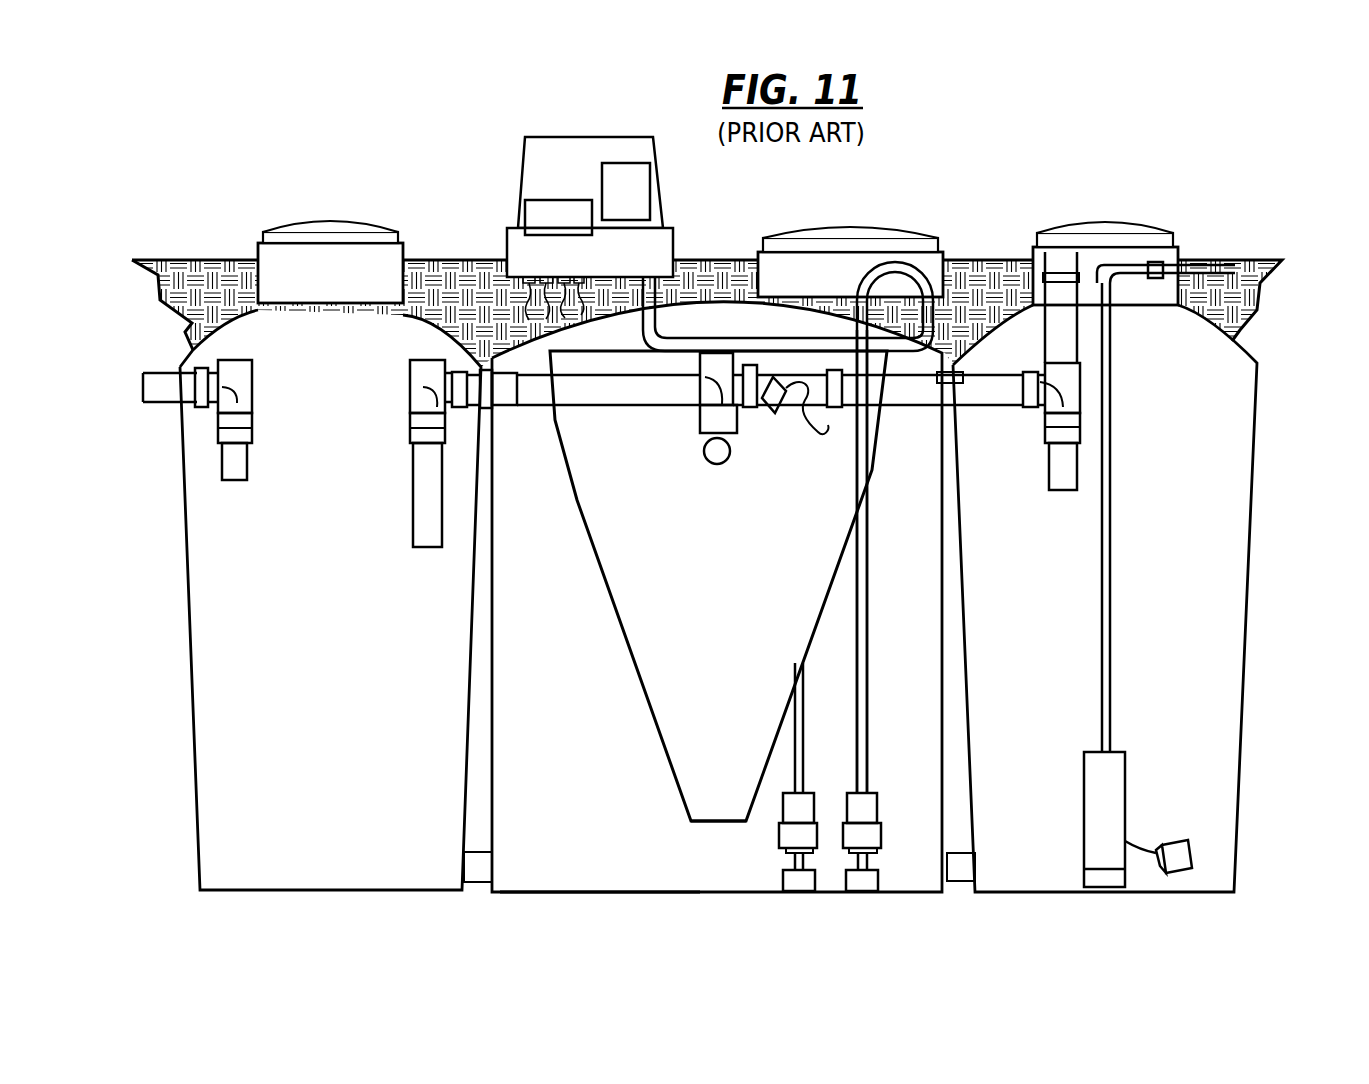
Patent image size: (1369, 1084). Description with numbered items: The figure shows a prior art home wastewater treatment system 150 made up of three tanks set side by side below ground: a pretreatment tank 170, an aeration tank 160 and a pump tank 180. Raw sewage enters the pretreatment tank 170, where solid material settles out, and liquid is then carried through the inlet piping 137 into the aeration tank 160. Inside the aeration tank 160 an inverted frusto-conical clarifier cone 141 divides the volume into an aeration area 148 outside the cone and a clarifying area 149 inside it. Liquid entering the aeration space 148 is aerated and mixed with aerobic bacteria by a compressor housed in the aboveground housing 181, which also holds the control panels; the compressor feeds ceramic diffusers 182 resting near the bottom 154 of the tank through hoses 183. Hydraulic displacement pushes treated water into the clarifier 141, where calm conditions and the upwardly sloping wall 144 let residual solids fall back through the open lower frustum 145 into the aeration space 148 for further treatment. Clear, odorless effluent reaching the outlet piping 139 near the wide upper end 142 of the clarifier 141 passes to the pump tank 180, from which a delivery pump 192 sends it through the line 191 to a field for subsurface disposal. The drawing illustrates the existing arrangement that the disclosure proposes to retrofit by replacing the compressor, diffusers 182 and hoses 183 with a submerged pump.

The existing system 150 is at (1132, 116).
The pretreatment tank 170 is at (178, 659).
The aeration tank 160 is at (480, 693).
The pump tank 180 is at (1263, 547).
The housing 181 is at (513, 163).
The wide upper end 142 is at (558, 388).
The inlet pipe 137 is at (503, 398).
The outlet piping 139 is at (733, 455).
The clarifier cone 141 is at (628, 677).
The upwardly sloping wall 144 is at (594, 545).
The aeration area 148 is at (561, 648).
The clarifying area 149 is at (726, 596).
The frustum 145 is at (707, 823).
The bottom 154 is at (532, 886).
The hoses 183 is at (875, 655).
The diffusers 182 is at (766, 837).
The line 191 is at (1187, 263).
The delivery pump 192 is at (1136, 786).